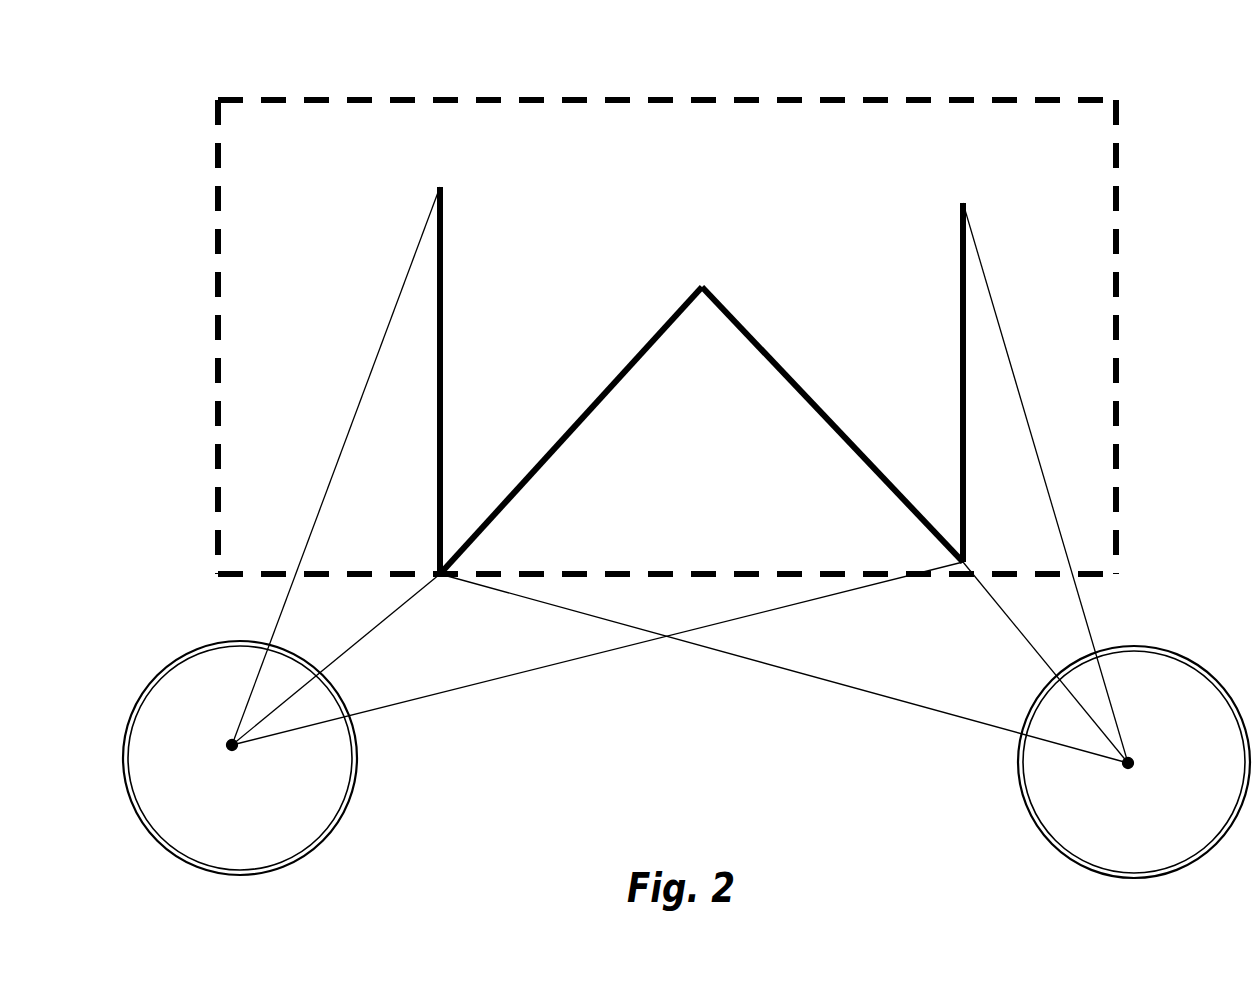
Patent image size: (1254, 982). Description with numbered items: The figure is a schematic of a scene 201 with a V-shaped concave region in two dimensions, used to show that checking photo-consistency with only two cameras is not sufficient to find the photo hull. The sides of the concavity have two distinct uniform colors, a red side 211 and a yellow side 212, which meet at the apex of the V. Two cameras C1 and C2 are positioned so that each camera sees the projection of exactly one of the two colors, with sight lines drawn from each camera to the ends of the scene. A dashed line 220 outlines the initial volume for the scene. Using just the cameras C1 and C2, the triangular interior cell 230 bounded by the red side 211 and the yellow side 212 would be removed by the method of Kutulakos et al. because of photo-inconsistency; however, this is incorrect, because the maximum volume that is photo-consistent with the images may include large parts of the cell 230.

The dashed line 220 is at (564, 100).
The scene 201 is at (443, 258).
The red side 211 is at (578, 428).
The yellow side 212 is at (857, 444).
The triangular interior cell 230 is at (690, 473).
The camera C1 is at (232, 745).
The camera C2 is at (1128, 763).